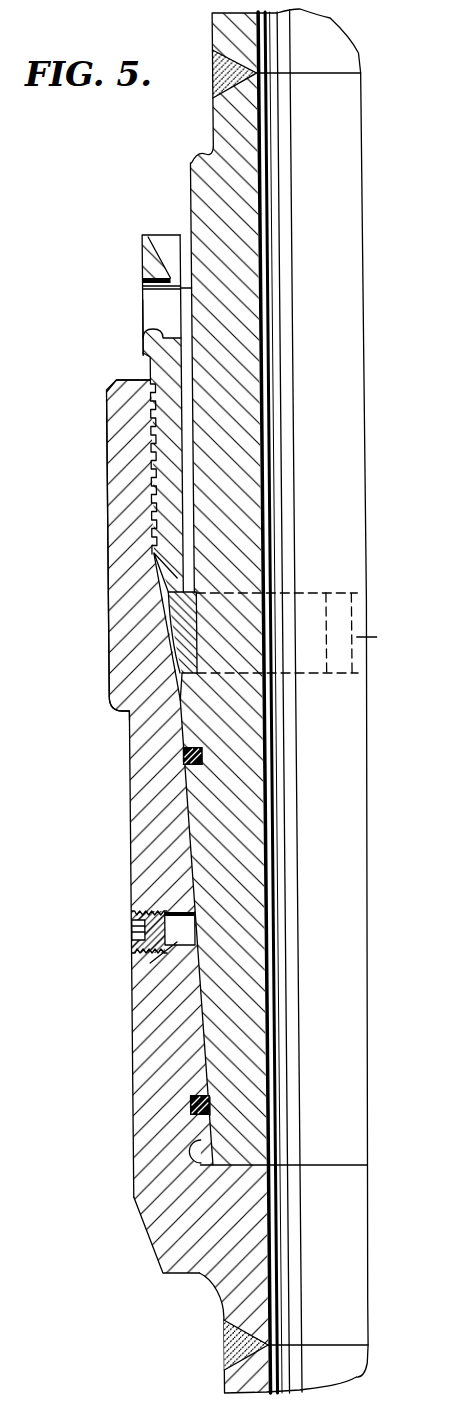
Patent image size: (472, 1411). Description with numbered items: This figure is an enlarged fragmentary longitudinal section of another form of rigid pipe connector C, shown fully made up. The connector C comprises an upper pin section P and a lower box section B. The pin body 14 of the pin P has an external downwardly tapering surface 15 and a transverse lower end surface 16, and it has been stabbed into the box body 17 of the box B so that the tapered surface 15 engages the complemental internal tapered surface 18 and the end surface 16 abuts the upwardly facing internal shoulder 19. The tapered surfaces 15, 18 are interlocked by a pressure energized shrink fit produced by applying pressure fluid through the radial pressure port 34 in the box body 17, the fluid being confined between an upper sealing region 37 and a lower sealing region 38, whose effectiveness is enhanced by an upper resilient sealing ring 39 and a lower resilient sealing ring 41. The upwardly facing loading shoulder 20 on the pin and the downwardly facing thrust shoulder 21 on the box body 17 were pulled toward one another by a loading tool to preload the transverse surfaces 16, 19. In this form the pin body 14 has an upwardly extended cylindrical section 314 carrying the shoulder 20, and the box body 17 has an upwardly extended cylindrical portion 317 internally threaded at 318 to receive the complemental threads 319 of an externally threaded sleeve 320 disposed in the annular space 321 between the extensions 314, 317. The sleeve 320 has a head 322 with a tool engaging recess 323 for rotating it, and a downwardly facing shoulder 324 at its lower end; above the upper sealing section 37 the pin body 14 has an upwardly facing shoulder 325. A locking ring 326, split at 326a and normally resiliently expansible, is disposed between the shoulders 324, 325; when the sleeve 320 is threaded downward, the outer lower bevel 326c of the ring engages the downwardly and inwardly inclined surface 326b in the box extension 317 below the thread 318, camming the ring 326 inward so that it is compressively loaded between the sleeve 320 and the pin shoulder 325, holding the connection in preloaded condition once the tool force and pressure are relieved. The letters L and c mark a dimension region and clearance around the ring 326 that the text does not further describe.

The circular body section of pin 14 is at (239, 857).
The external downwardly tapering surface 15 is at (185, 979).
The lower end surface 16 is at (258, 1188).
The circular body section of box 17 is at (147, 888).
The internal downwardly tapered surface 18 is at (196, 1000).
The inner lower transverse shoulder 19 is at (256, 1186).
The thrust or pre-load shoulder 20 is at (207, 151).
The thrust shoulder 21 is at (108, 716).
The radial pressure port 34 is at (123, 967).
The upper opposed sealing region 37 is at (181, 788).
The lower opposed sealing region 38 is at (202, 1122).
The upper sealing ring 39 is at (176, 753).
The lower sealing ring 41 is at (178, 1109).
The upwardly extended cylindrical section 314 is at (239, 402).
The upwardly extended cylindrical portion 317 is at (116, 537).
The internal threads 318 is at (146, 487).
The complemental threads 319 is at (146, 450).
The externally threaded sleeve 320 is at (156, 412).
The annular space 321 is at (182, 456).
The head 322 is at (138, 256).
The tool engaging opening or recess 323 is at (139, 323).
The downwardly facing shoulder 324 is at (151, 554).
The upwardly facing shoulder 325 is at (174, 683).
The locking ring 326 is at (169, 622).
The split 326a is at (315, 633).
The inclined surface 326b is at (145, 562).
The outer and lower bevel 326c is at (166, 668).
The box section B is at (131, 840).
The pipe connector C is at (107, 1039).
The length L is at (203, 630).
The pin section P is at (249, 940).
The clearance c is at (361, 636).